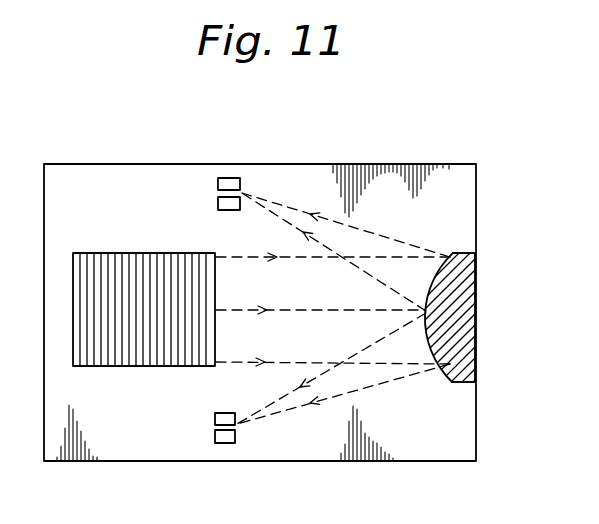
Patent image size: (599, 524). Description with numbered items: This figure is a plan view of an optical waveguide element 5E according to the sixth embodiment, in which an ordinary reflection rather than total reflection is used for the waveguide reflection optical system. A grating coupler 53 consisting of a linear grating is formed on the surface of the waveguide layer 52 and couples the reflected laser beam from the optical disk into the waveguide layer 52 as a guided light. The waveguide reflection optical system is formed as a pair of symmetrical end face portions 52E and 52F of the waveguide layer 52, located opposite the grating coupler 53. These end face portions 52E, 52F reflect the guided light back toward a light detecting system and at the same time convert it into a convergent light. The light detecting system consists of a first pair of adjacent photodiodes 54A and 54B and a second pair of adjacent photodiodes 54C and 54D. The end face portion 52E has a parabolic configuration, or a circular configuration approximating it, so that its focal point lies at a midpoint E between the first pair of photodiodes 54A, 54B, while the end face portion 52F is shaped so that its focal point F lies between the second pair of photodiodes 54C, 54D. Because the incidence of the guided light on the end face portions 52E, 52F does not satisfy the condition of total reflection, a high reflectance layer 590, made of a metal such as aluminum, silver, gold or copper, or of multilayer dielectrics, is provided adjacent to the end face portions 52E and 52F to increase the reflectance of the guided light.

The optical waveguide element 5E is at (519, 200).
The waveguide layer 52 is at (155, 170).
The grating coupler 53 is at (143, 257).
The photodiode 54A is at (229, 178).
The photodiode 54B is at (230, 210).
The photodiode 54C is at (228, 413).
The photodiode 54D is at (224, 444).
The focal point E is at (244, 191).
The focal point F is at (238, 425).
The high reflectance layer 590 is at (478, 318).
The end face portion 52E is at (444, 287).
The end face portion 52F is at (439, 333).